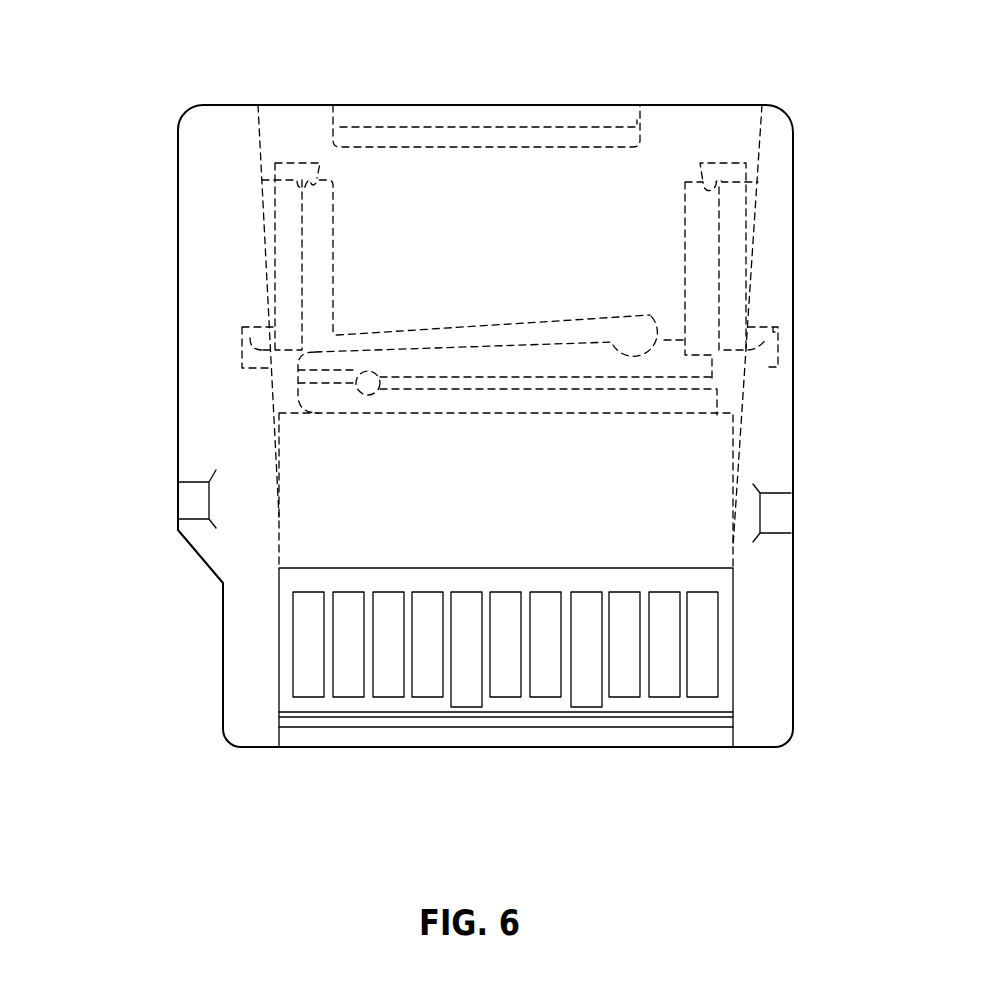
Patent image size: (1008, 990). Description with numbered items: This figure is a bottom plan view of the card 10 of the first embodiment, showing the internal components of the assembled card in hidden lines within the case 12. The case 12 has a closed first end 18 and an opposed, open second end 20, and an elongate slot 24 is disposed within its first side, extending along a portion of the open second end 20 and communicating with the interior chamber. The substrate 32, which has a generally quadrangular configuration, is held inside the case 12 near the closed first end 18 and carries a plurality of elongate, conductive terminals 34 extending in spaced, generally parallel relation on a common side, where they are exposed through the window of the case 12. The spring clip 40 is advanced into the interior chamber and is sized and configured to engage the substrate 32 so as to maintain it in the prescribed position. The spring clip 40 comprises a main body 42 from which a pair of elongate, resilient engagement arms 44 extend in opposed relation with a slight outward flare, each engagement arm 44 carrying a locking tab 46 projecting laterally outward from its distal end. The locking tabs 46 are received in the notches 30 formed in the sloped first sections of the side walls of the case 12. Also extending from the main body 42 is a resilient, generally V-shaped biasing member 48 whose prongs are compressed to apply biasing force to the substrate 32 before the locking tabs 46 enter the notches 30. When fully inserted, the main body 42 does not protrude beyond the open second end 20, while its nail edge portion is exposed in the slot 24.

The card 10 is at (158, 444).
The case 12 is at (803, 280).
The closed first end 18 is at (578, 748).
The open second end 20 is at (694, 105).
The elongate slot 24 is at (556, 130).
The notch 30 is at (768, 368).
The substrate 32 is at (308, 700).
The terminals 34 is at (468, 695).
The spring clip 40 is at (735, 223).
The main body 42 is at (372, 208).
The engagement arms 44 is at (285, 260).
The locking tab 46 is at (762, 333).
The biasing member 48 is at (688, 403).